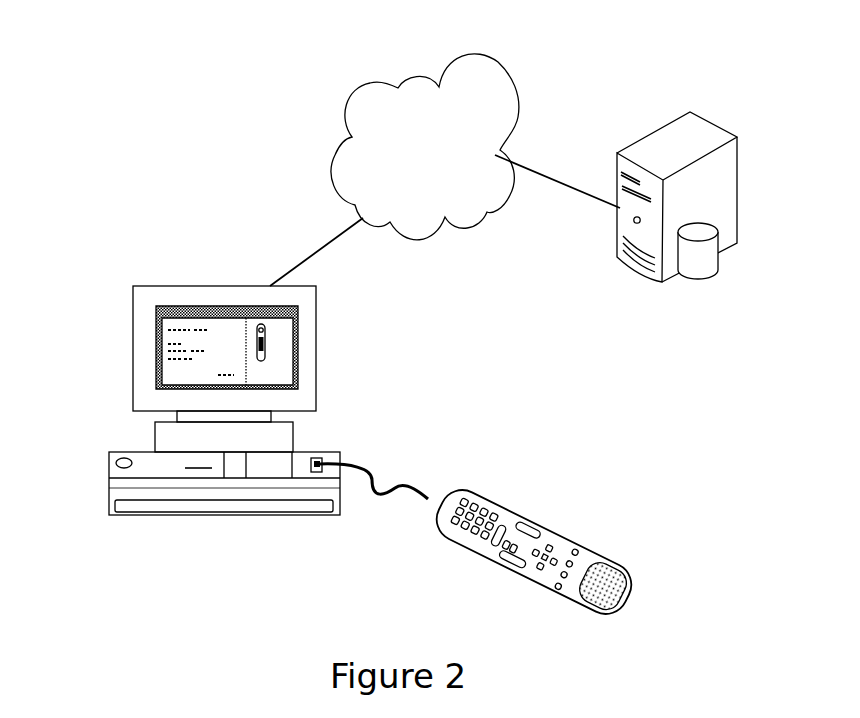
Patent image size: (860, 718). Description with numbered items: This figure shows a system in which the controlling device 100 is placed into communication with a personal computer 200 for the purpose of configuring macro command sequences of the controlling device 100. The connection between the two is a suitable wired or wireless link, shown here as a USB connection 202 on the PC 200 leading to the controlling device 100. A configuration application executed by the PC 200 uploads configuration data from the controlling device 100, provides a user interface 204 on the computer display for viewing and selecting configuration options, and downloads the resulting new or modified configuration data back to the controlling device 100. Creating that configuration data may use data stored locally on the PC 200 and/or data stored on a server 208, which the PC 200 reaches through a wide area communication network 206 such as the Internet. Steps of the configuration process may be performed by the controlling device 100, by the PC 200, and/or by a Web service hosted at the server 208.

The controlling device 100 is at (523, 513).
The personal computer 200 is at (231, 373).
The USB connection 202 is at (318, 455).
The user interface 204 is at (199, 341).
The wide area communication network 206 is at (387, 82).
The server 208 is at (738, 193).